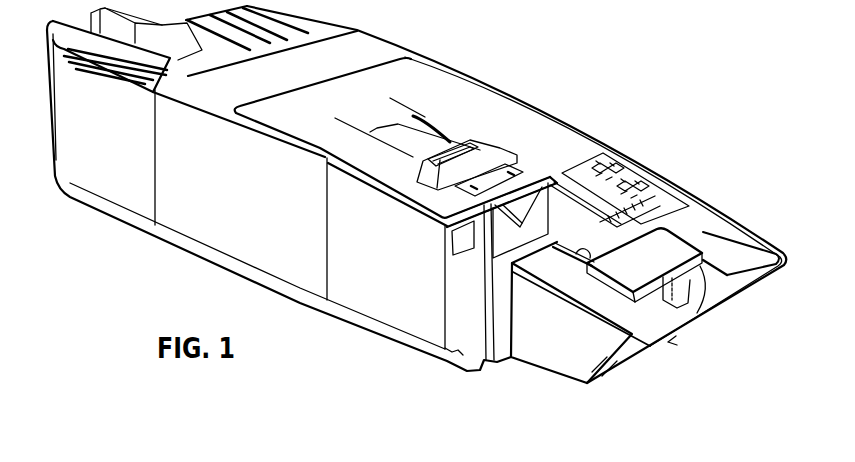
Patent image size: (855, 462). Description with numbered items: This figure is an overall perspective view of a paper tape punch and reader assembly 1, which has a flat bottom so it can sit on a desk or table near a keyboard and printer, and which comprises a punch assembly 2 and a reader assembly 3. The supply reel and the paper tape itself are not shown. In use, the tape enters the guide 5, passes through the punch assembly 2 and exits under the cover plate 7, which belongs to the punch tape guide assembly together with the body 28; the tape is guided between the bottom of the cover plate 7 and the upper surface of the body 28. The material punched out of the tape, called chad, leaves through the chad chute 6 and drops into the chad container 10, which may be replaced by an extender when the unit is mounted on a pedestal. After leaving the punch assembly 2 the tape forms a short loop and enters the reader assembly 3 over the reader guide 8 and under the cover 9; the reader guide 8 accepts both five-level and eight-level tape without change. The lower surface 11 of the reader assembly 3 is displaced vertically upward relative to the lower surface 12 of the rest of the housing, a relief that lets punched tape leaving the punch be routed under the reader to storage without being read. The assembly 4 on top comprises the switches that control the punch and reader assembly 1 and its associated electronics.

The punch and reader assembly 1 is at (389, 45).
The punch assembly 2 is at (533, 147).
The reader assembly 3 is at (686, 228).
The switch assembly 4 is at (628, 175).
The guide 5 is at (453, 127).
The chad chute 6 is at (490, 147).
The cover plate 7 is at (540, 167).
The reader guide 8 is at (667, 208).
The cover 9 is at (727, 241).
The chad container 10 is at (372, 312).
The lower surface of the reader assembly 11 is at (576, 385).
The lower surface of the housing 12 is at (477, 373).
The body 28 is at (535, 228).